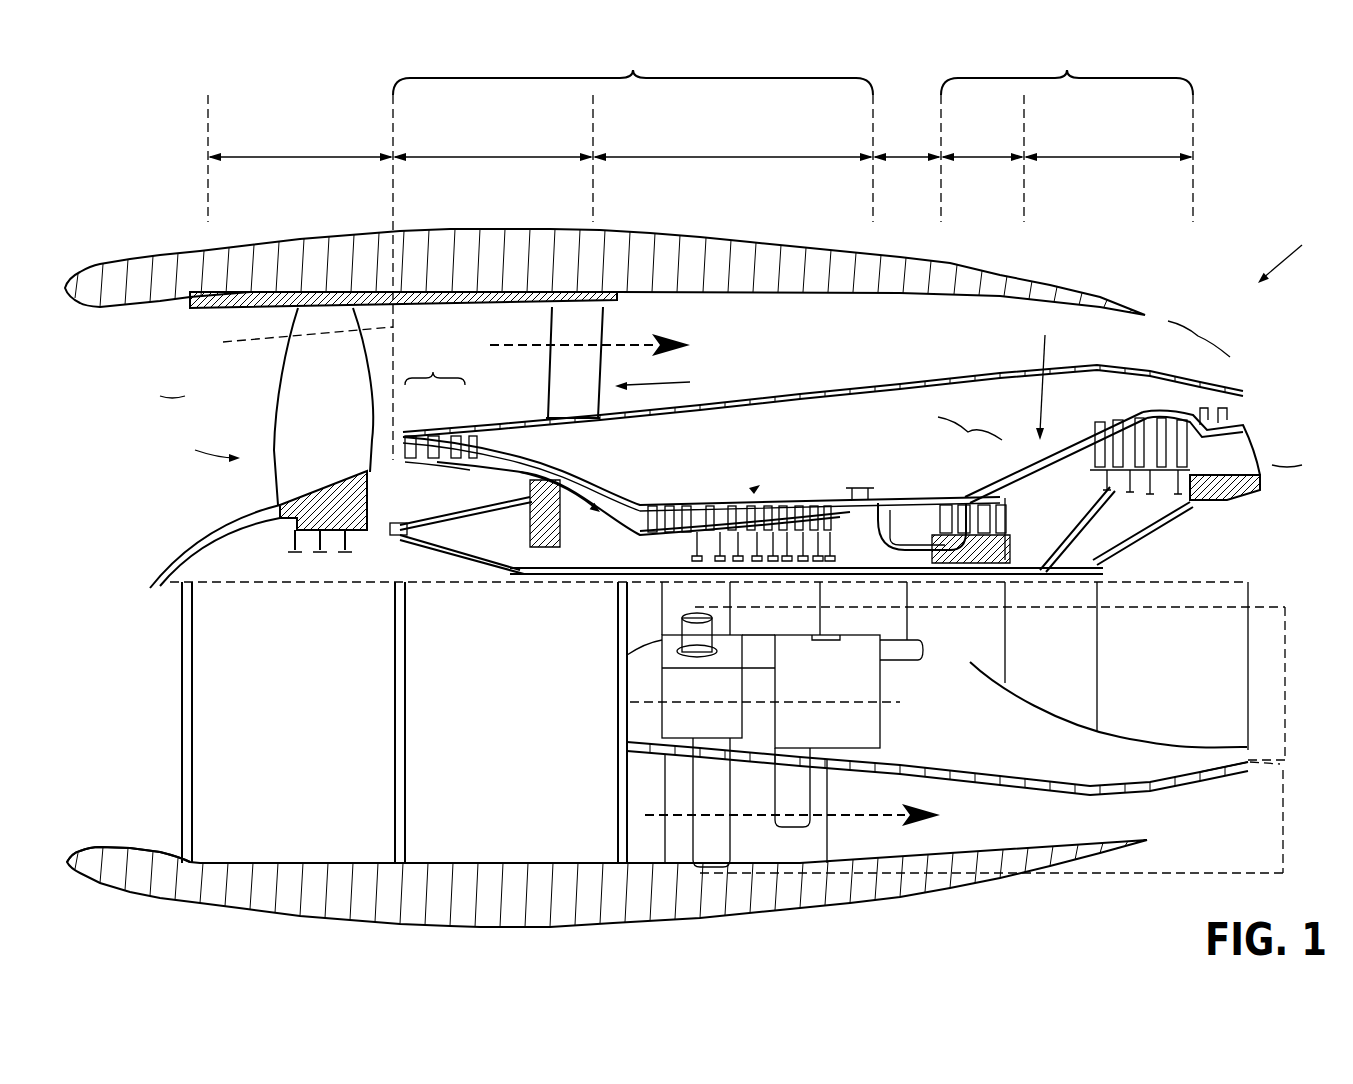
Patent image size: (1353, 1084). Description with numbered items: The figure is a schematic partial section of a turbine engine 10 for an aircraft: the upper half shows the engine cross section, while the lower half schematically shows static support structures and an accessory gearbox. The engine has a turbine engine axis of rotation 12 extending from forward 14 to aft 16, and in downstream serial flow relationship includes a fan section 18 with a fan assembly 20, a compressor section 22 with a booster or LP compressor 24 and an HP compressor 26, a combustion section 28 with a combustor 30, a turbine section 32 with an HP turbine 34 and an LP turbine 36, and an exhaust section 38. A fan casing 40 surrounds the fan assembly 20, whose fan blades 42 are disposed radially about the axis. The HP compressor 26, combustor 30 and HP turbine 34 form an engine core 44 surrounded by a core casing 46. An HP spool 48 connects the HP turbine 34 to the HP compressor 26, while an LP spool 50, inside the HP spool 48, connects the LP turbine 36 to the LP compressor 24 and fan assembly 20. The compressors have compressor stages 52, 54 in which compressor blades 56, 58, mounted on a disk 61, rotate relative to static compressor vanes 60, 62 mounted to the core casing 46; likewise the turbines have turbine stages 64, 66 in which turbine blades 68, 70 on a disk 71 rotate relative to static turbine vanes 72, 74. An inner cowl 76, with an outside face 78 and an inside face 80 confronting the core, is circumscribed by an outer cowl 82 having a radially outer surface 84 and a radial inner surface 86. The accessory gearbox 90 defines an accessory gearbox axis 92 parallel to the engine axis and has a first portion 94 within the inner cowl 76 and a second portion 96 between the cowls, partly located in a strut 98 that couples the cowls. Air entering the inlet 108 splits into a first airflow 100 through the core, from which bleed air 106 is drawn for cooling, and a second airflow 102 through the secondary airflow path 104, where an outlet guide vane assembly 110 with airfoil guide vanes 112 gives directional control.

The turbine engine 10 is at (1296, 252).
The turbine engine axis of rotation 12 is at (1187, 560).
The forward 14 is at (172, 384).
The aft 16 is at (1287, 453).
The fan section 18 is at (300, 146).
The fan assembly 20 is at (198, 447).
The compressor section 22 is at (633, 67).
The low pressure (LP) compressor 24 is at (493, 146).
The high pressure (HP) compressor 26 is at (733, 146).
The combustion section 28 is at (907, 142).
The combustor 30 is at (905, 505).
The turbine section 32 is at (1067, 69).
The HP turbine 34 is at (982, 144).
The LP turbine 36 is at (1108, 144).
The exhaust section 38 is at (1262, 428).
The fan casing 40 is at (420, 292).
The fan blades 42 is at (355, 353).
The engine core 44 is at (1047, 375).
The core casing 46 is at (1072, 435).
The HP spool 48 is at (857, 498).
The LP spool 50 is at (525, 565).
The compressor stages 52 is at (441, 405).
The compressor stages 54 is at (725, 420).
The compressor blades 56 is at (455, 434).
The compressor blades 58 is at (664, 505).
The static compressor vanes 60 is at (410, 434).
The disk 61 is at (420, 467).
The static compressor vanes 62 is at (647, 495).
The turbine stages 64 is at (970, 478).
The turbine stages 66 is at (1163, 402).
The turbine blades 68 is at (960, 505).
The turbine blades 70 is at (1180, 425).
The disk 71 is at (1008, 498).
The static turbine vanes 72 is at (936, 500).
The static turbine vanes 74 is at (1168, 425).
The inner cowl 76 is at (845, 385).
The outside face 78 is at (1165, 786).
The inside face 80 is at (1182, 775).
The outer cowl 82 is at (300, 232).
The radially outer surface 84 is at (352, 927).
The radial inner surface 86 is at (148, 855).
The accessory gearbox 90 is at (655, 732).
The accessory gearbox axis 92 is at (930, 703).
The first portion 94 is at (1292, 694).
The second portion 96 is at (1288, 826).
The strut 98 is at (665, 825).
The first airflow 100 is at (587, 497).
The second airflow 102 is at (495, 343).
The secondary airflow path 104 is at (1025, 808).
The bleed air 106 is at (755, 488).
The inlet 108 is at (280, 342).
The outlet guide vane assembly 110 is at (679, 378).
The airfoil guide vanes 112 is at (548, 374).